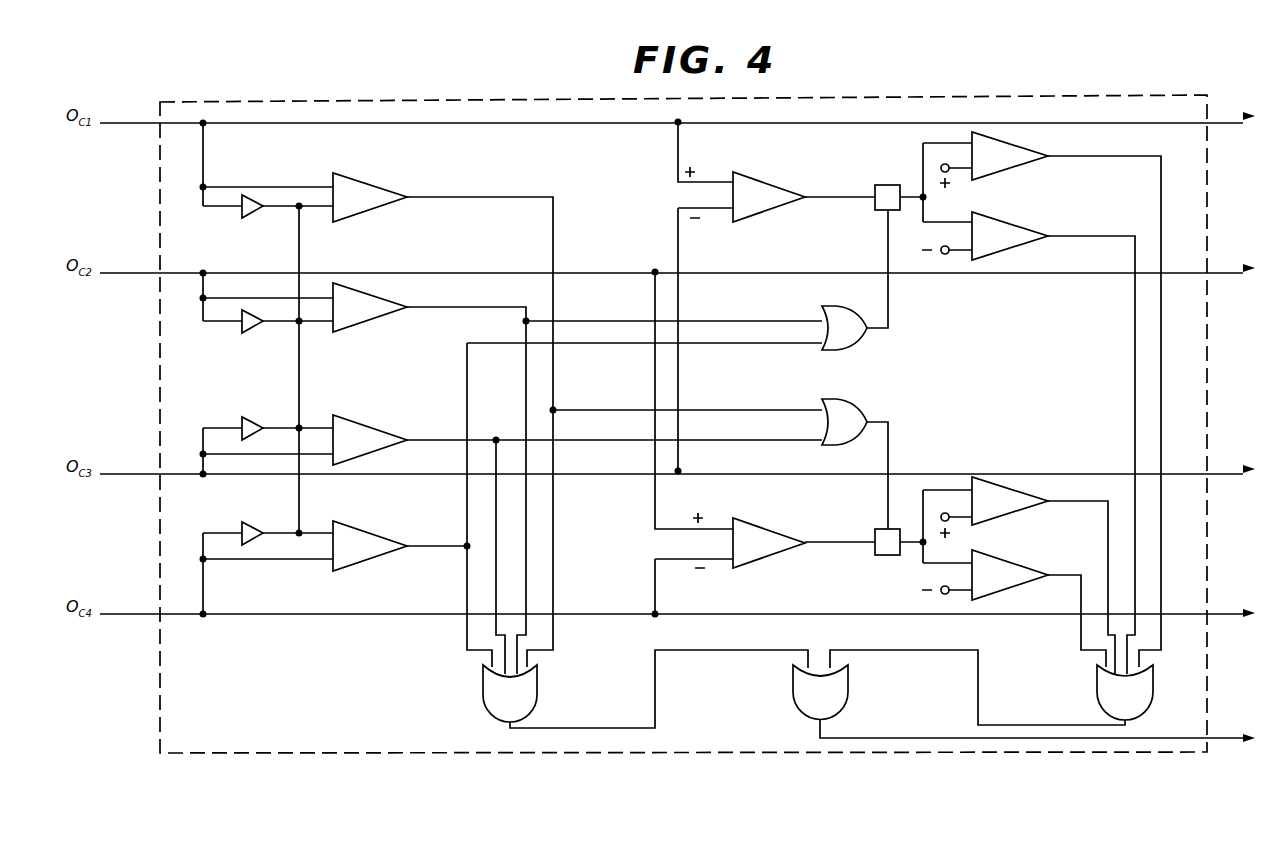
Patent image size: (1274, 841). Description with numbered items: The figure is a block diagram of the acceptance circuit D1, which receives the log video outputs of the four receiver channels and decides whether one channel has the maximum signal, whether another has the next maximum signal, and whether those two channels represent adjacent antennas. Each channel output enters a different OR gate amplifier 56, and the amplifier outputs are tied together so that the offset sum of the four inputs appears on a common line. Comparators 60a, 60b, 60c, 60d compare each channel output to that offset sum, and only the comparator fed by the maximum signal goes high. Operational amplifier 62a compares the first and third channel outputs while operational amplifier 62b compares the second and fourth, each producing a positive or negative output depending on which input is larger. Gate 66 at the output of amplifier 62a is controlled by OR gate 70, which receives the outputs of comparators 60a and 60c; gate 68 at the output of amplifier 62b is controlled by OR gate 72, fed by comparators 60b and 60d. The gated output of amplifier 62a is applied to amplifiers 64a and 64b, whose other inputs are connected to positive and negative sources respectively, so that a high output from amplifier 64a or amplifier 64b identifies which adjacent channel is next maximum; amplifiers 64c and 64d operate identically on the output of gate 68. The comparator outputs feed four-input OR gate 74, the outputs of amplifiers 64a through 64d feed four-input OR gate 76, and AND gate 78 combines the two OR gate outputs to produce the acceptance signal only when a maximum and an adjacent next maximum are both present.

The acceptance circuit D1 is at (1183, 68).
The OR gate amplifier 56 is at (254, 212).
The comparator 60a is at (355, 190).
The comparator 60b is at (376, 308).
The comparator 60c is at (408, 404).
The comparator 60d is at (408, 510).
The operational amplifier 62a is at (760, 182).
The operational amplifier 62b is at (776, 542).
The operational amplifier 64a is at (1010, 155).
The operational amplifier 64b is at (1008, 230).
The operational amplifier 64c is at (1010, 500).
The operational amplifier 64d is at (1005, 572).
The gate 66 is at (885, 190).
The gate 68 is at (890, 550).
The OR gate 70 is at (850, 316).
The OR gate 72 is at (850, 408).
The four-input OR gate 74 is at (492, 687).
The four-input OR gate 76 is at (1115, 686).
The AND gate 78 is at (805, 690).